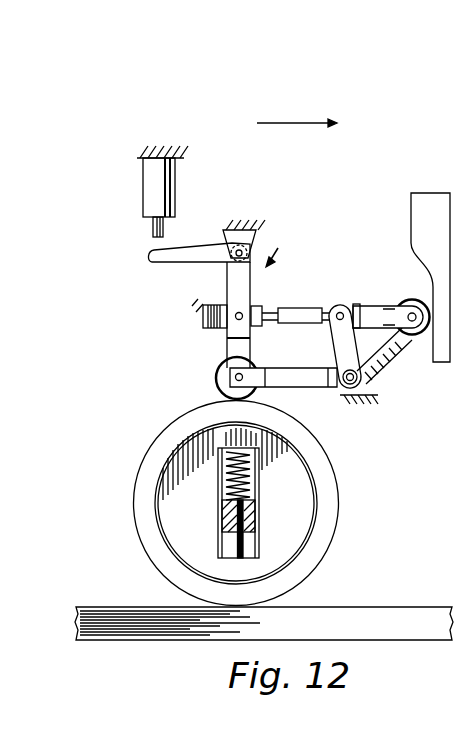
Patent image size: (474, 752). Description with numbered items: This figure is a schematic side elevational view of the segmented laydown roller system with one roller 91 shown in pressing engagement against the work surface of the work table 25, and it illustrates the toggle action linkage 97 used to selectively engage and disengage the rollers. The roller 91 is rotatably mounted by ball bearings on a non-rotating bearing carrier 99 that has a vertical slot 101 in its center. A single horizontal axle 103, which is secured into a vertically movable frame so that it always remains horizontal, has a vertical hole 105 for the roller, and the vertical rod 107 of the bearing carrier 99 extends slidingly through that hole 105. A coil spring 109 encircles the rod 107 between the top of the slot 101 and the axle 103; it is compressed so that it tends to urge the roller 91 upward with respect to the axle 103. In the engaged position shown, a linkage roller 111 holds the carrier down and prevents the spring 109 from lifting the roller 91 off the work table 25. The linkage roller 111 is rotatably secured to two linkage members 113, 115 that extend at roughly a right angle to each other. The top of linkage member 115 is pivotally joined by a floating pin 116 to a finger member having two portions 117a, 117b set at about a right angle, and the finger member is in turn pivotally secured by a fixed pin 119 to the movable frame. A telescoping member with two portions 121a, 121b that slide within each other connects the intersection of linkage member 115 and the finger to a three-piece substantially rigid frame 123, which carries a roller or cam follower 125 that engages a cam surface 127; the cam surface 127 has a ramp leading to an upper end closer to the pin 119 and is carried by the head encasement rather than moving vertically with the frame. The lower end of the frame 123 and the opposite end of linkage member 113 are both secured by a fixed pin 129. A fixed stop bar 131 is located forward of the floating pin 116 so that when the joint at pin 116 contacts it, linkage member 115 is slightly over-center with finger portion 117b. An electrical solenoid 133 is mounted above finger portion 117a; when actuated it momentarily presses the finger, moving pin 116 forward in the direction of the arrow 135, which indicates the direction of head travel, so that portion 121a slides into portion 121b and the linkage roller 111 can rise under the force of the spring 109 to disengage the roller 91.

The work table 25 is at (392, 607).
The roller 91 is at (152, 446).
The toggle action linkage 97 is at (305, 247).
The bearing carrier 99 is at (185, 518).
The vertical slot 101 is at (258, 552).
The axle 103 is at (256, 525).
The vertical hole 105 is at (262, 543).
The vertical rod 107 is at (235, 552).
The coil spring 109 is at (256, 476).
The linkage roller 111 is at (216, 378).
The linkage member 113 is at (281, 388).
The linkage member 115 is at (228, 350).
The floating pin 116 is at (241, 319).
The finger portion 117a is at (192, 252).
The finger portion 117b is at (227, 281).
The fixed pin 119 is at (259, 240).
The telescoping member portion 121a is at (268, 308).
The telescoping member portion 121b is at (310, 307).
The rigid frame 123 is at (385, 358).
The cam follower 125 is at (420, 298).
The cam surface 127 is at (411, 228).
The fixed pin 129 is at (351, 386).
The fixed stop bar 131 is at (205, 318).
The solenoid 133 is at (155, 181).
The arrow 135 is at (299, 122).